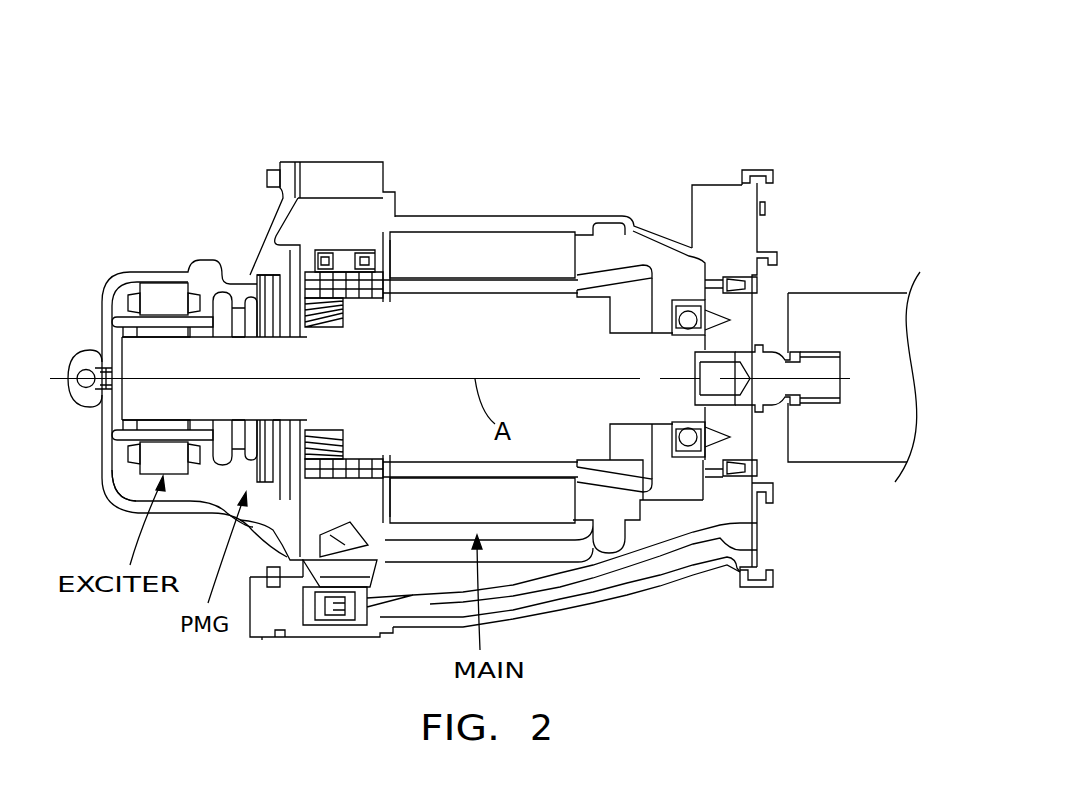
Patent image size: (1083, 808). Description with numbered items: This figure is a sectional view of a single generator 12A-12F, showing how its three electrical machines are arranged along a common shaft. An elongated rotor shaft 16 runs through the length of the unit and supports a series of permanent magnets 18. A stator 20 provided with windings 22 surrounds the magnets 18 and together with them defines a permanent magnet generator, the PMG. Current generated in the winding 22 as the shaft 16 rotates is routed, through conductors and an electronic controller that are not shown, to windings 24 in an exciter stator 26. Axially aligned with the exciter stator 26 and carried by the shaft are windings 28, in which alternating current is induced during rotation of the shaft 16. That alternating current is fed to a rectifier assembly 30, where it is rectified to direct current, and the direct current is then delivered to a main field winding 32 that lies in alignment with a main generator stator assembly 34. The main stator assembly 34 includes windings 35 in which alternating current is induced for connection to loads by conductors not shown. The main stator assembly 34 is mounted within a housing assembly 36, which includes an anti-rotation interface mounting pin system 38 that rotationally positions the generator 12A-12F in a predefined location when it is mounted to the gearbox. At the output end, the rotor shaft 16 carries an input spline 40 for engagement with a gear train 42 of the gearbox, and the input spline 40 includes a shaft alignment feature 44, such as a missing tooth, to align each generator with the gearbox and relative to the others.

The generator 12A-12F is at (733, 97).
The rotor shaft 16 is at (127, 412).
The permanent magnets 18 is at (244, 338).
The stator 20 is at (235, 306).
The windings 22 is at (220, 304).
The windings 24 is at (131, 306).
The exciter stator 26 is at (162, 288).
The windings 28 is at (163, 324).
The rectifier assembly 30 is at (117, 453).
The main field winding 32 is at (442, 303).
The main generator stator assembly 34 is at (477, 248).
The windings 35 is at (633, 270).
The housing assembly 36 is at (573, 216).
The anti-rotation interface mounting pin system 38 is at (777, 196).
The input spline 40 is at (825, 349).
The gear train 42 is at (901, 400).
The shaft alignment feature 44 is at (826, 398).